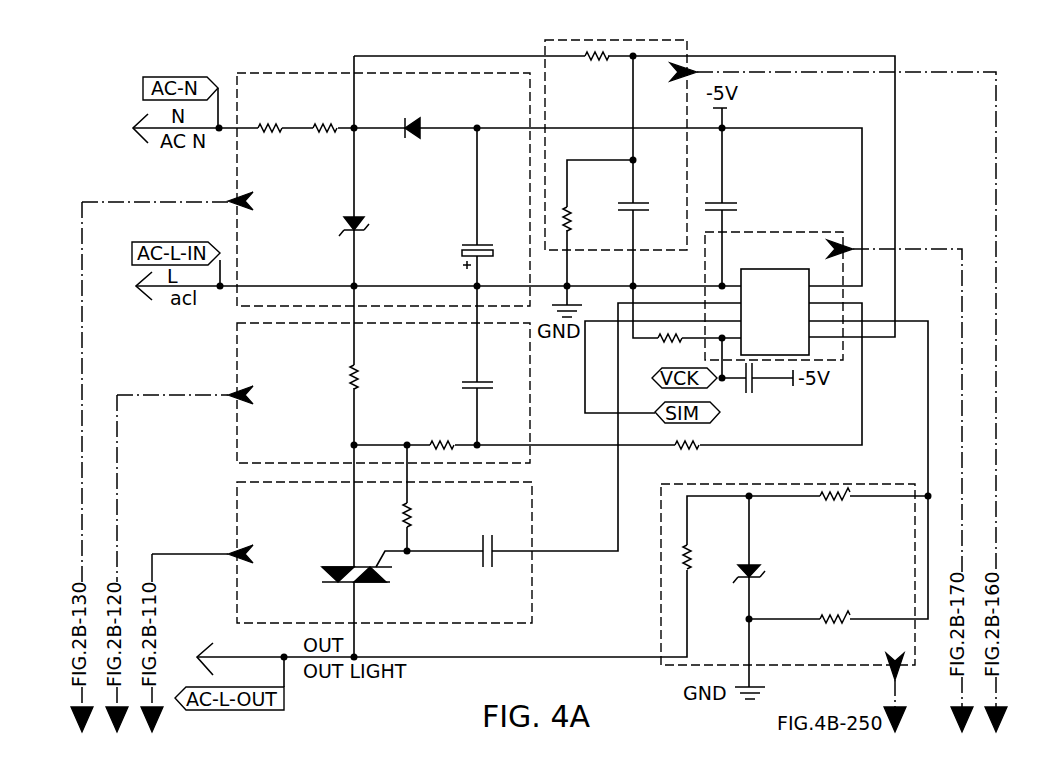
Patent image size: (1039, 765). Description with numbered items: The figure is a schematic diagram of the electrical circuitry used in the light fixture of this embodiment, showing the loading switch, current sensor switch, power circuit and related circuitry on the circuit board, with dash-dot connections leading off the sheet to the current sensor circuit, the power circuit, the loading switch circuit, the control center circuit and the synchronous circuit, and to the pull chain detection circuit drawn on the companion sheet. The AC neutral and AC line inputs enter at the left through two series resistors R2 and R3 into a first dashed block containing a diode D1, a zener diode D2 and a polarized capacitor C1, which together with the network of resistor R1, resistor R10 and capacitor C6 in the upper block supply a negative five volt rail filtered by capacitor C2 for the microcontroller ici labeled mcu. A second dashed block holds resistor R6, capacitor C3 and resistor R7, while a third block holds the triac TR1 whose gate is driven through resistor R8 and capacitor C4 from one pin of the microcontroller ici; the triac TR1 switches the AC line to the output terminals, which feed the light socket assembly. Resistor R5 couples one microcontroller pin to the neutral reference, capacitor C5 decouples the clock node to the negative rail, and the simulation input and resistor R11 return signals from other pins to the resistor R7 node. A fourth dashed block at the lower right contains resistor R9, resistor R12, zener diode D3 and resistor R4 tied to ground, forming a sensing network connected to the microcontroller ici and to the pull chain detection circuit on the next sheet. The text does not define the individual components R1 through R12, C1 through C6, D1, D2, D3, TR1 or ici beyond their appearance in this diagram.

The resistor R1 is at (598, 68).
The resistor R2 is at (270, 115).
The resistor R3 is at (325, 115).
The resistor R4 is at (835, 628).
The resistor R5 is at (670, 348).
The resistor R6 is at (374, 378).
The resistor R7 is at (444, 433).
The resistor R8 is at (425, 515).
The resistor R9 is at (703, 549).
The resistor R10 is at (588, 217).
The resistor R11 is at (691, 455).
The resistor R12 is at (839, 506).
The capacitor C1 is at (461, 252).
The capacitor C2 is at (737, 205).
The capacitor C3 is at (471, 370).
The capacitor C4 is at (473, 556).
The capacitor C5 is at (765, 387).
The capacitor C6 is at (649, 205).
The diode D1 is at (433, 116).
The zener diode D2 is at (367, 212).
The zener diode D3 is at (762, 562).
The triac TR1 is at (363, 590).
The microcontroller ici mcu ici is at (775, 294).